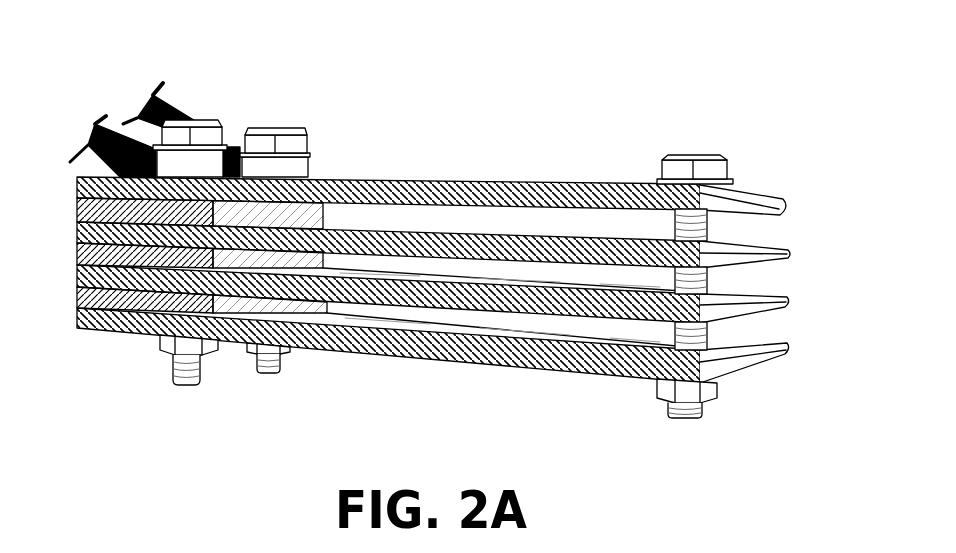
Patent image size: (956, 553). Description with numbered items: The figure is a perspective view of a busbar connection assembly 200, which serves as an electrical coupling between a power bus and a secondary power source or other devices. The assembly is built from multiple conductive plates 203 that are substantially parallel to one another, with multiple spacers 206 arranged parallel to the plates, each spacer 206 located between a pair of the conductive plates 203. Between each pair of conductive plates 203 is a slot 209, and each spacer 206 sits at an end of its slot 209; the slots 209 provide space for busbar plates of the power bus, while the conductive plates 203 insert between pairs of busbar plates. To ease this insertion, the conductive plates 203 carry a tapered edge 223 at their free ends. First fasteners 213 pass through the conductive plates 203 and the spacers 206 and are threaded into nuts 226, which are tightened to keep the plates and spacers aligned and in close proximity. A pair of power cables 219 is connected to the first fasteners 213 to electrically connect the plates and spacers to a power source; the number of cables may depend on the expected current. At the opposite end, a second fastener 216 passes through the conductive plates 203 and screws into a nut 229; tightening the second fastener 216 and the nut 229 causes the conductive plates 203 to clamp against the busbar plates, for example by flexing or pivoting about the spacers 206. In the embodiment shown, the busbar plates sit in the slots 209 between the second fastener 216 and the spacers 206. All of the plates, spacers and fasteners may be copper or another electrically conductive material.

The busbar connection assembly 200 is at (128, 464).
The conductive plates 203 is at (535, 350).
The spacers 206 is at (82, 210).
The slots 209 is at (435, 210).
The first fasteners 213 is at (178, 385).
The second fastener 216 is at (688, 420).
The power cables 219 is at (113, 130).
The tapered edge 223 is at (733, 212).
The nuts 226 is at (252, 343).
The nut 229 is at (663, 392).